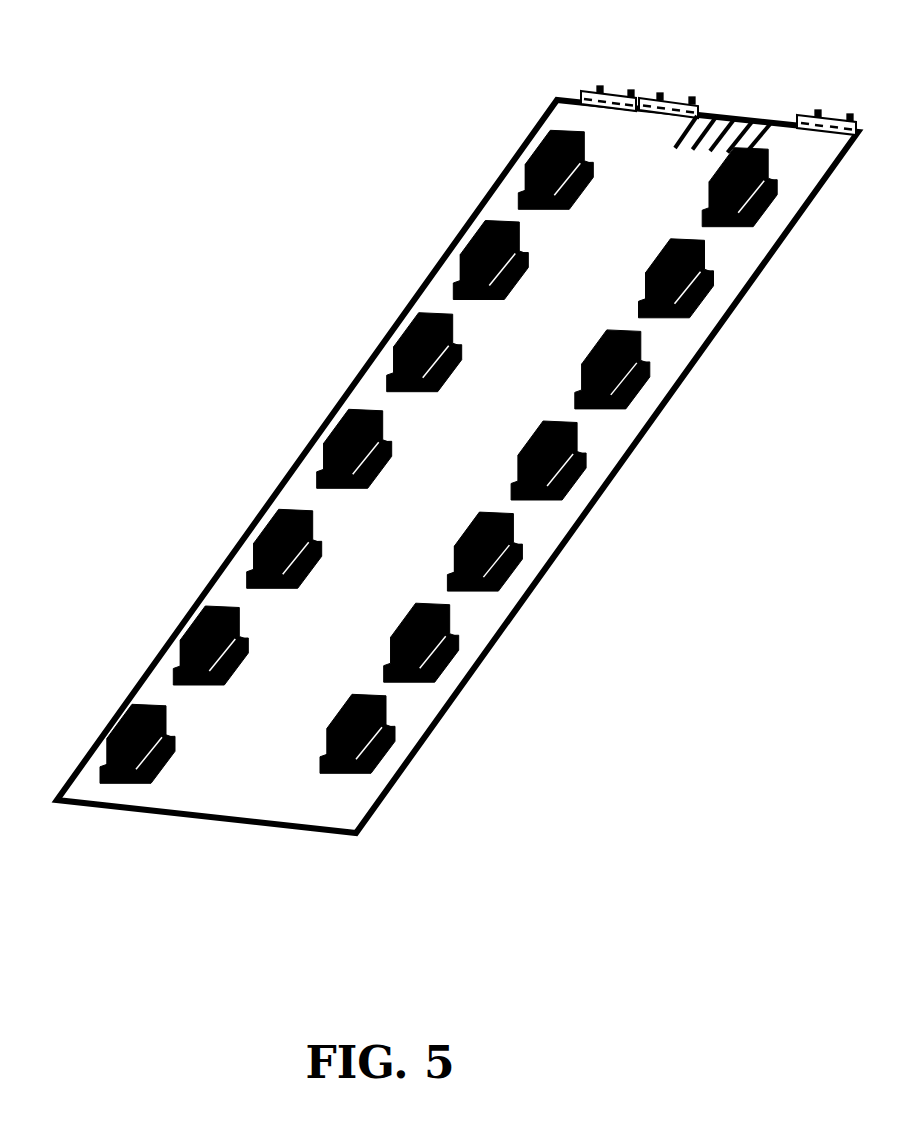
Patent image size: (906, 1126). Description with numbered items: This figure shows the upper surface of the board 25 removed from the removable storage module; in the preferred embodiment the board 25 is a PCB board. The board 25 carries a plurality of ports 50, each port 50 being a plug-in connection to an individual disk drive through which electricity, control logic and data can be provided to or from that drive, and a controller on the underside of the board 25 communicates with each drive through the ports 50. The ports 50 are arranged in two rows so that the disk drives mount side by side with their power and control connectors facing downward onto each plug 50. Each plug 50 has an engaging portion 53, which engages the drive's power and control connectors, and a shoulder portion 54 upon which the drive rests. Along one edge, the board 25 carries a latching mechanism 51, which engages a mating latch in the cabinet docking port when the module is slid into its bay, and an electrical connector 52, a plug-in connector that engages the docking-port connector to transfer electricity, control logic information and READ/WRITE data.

The board 25 is at (265, 828).
The port 50 is at (100, 732).
The latching mechanism 51 is at (599, 89).
The electrical connector 52 is at (735, 115).
The engaging portion 53 is at (182, 622).
The shoulder portion 54 is at (233, 673).